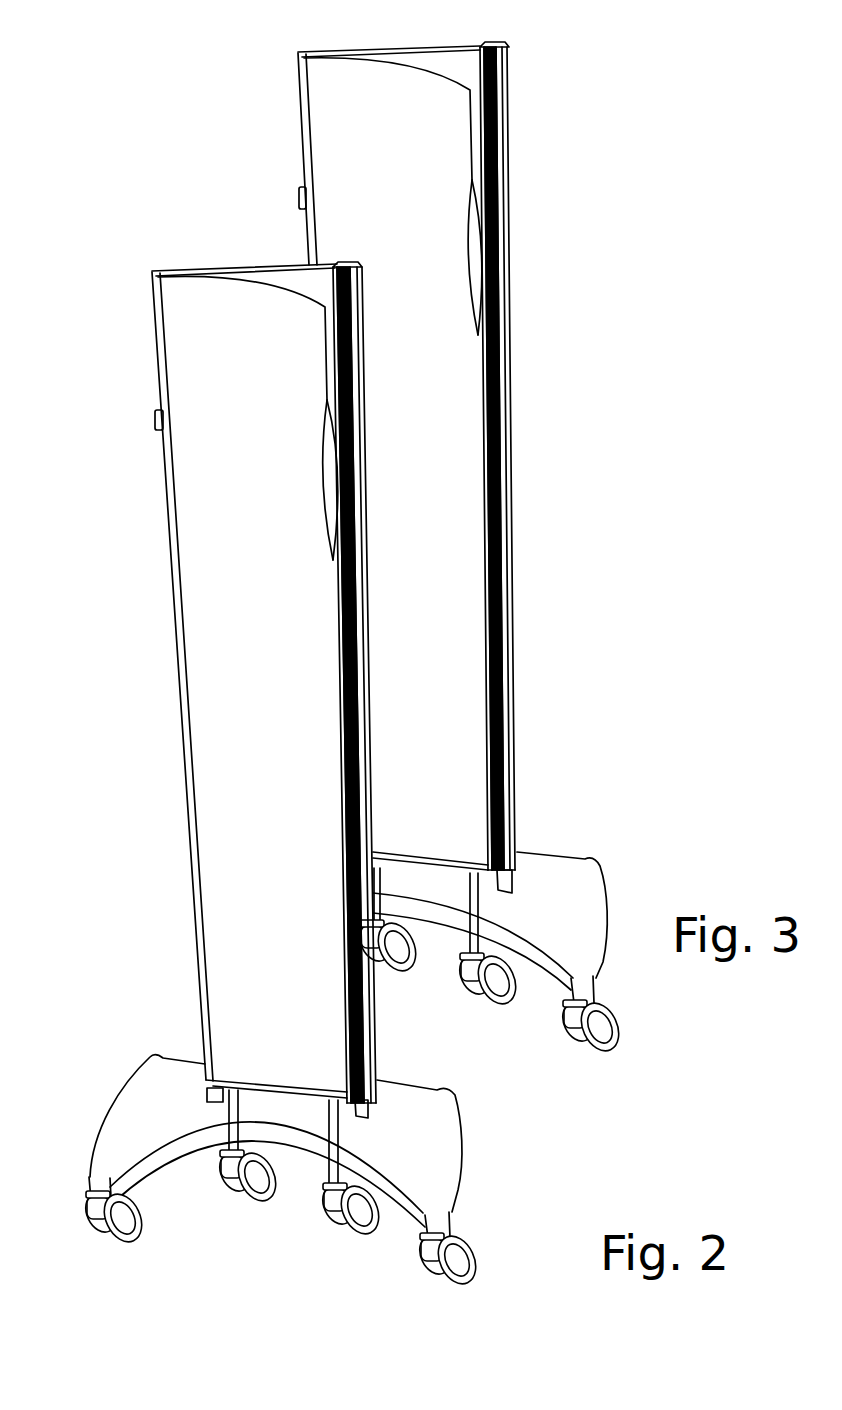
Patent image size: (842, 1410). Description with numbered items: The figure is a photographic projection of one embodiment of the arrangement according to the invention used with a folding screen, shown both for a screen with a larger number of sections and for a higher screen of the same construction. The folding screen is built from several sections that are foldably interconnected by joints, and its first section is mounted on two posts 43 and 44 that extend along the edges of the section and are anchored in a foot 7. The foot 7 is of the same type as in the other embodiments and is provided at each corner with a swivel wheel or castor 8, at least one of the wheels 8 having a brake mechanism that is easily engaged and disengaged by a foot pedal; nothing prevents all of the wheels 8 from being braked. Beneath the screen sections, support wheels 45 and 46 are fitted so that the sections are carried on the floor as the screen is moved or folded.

In FIG. 3, the foot 7 is at (587, 892).
In FIG. 2, the foot 7 is at (467, 1177).
In FIG. 3, the swivel wheel or castor 8 is at (600, 1027).
In FIG. 2, the swivel wheel or castor 8 is at (127, 1218).
In FIG. 2, the post 43 is at (210, 1097).
In FIG. 3, the post 44 is at (503, 880).
In FIG. 2, the post 44 is at (360, 1110).
In FIG. 2, the support wheel 45 is at (223, 1193).
In FIG. 3, the support wheel 46 is at (500, 980).
In FIG. 2, the support wheel 46 is at (360, 1212).